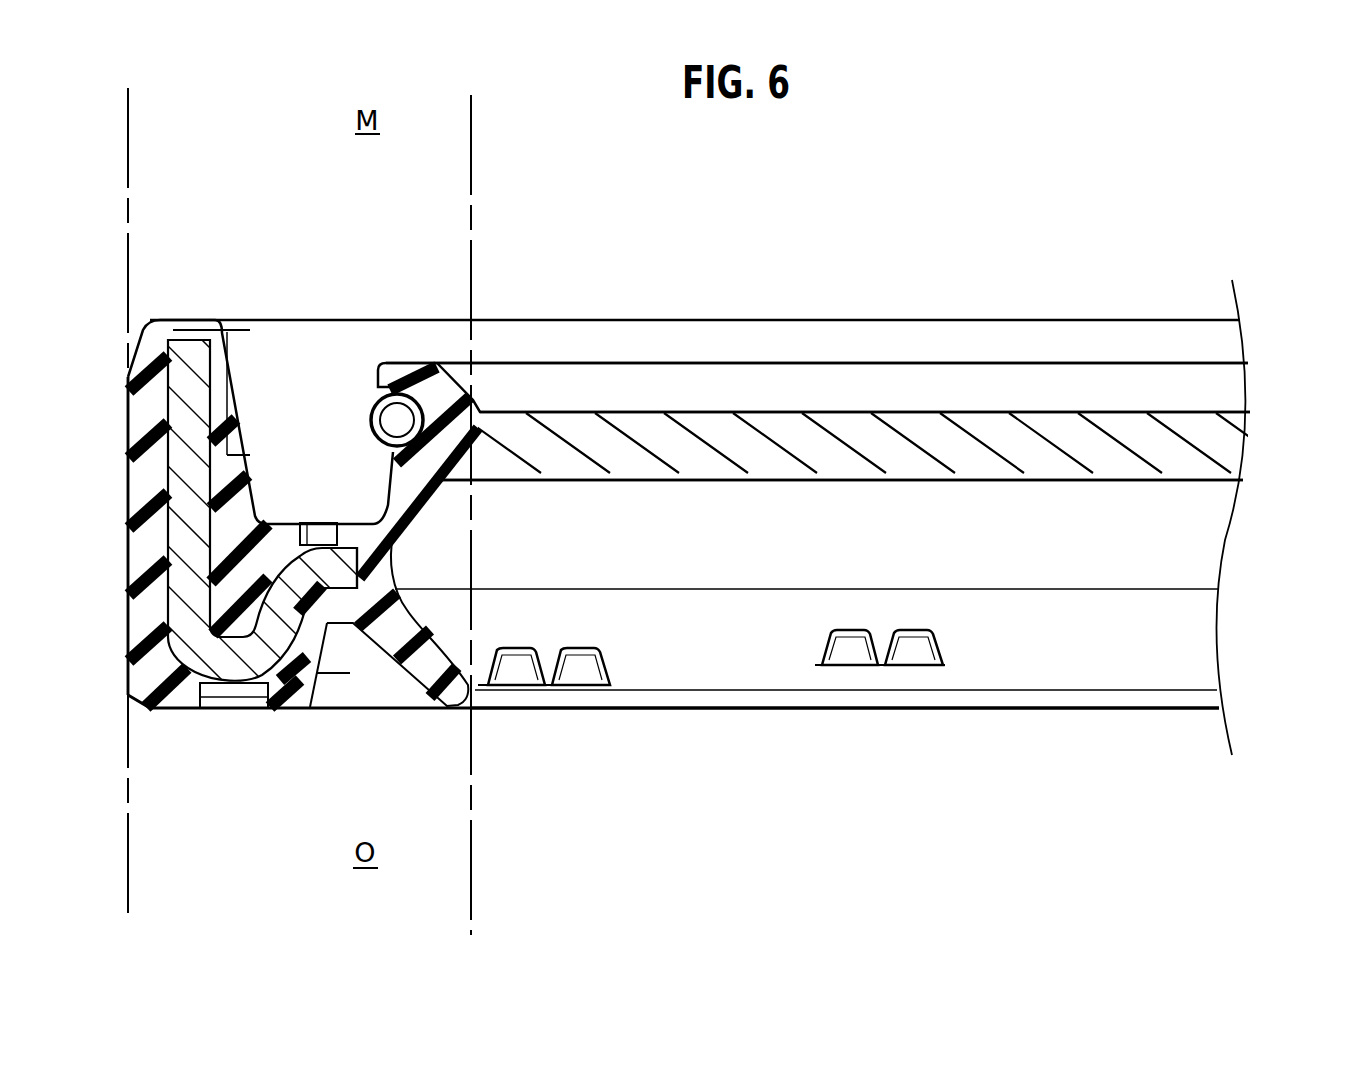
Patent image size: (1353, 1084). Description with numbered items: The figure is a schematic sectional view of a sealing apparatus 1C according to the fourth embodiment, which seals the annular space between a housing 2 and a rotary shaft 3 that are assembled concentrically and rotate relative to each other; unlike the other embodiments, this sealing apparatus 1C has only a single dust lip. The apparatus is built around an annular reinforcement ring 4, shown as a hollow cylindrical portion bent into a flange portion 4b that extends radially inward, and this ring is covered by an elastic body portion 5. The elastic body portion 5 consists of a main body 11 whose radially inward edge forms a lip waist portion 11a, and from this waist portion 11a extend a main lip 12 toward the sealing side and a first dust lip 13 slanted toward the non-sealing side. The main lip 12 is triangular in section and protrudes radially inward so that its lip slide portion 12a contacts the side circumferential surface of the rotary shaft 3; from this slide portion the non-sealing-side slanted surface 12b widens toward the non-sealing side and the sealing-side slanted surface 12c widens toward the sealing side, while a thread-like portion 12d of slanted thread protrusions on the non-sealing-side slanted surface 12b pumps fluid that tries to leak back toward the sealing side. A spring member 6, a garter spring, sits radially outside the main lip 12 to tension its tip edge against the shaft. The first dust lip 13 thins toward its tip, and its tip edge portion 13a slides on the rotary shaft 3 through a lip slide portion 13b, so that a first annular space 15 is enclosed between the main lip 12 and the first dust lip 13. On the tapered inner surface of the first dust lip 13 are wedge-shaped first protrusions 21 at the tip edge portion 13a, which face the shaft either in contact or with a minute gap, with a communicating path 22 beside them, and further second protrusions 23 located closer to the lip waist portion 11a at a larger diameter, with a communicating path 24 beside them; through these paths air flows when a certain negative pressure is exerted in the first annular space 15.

The sealing apparatus 1C is at (266, 168).
The housing 2 is at (128, 278).
The rotary shaft 3 is at (471, 185).
The reinforcement ring 4 is at (188, 398).
The flange portion 4b is at (333, 577).
The elastic body portion 5 is at (290, 680).
The spring member 6 is at (381, 407).
The main body 11 is at (150, 553).
The lip waist portion 11a is at (363, 537).
The main lip 12 is at (433, 392).
The lip slide portion 12a is at (1216, 412).
The non-sealing-side slanted surface 12b is at (1203, 442).
The sealing-side slanted surface 12c is at (1225, 385).
The thread-like portion 12d is at (1213, 478).
The first dust lip 13 is at (443, 707).
The tip edge portion 13a is at (1192, 677).
The lip slide portion 13b is at (1192, 688).
The first annular space 15 is at (967, 572).
The first protrusions 21 is at (522, 668).
The communicating path 22 is at (548, 668).
The second protrusions 23 is at (850, 650).
The communicating path 24 is at (818, 665).